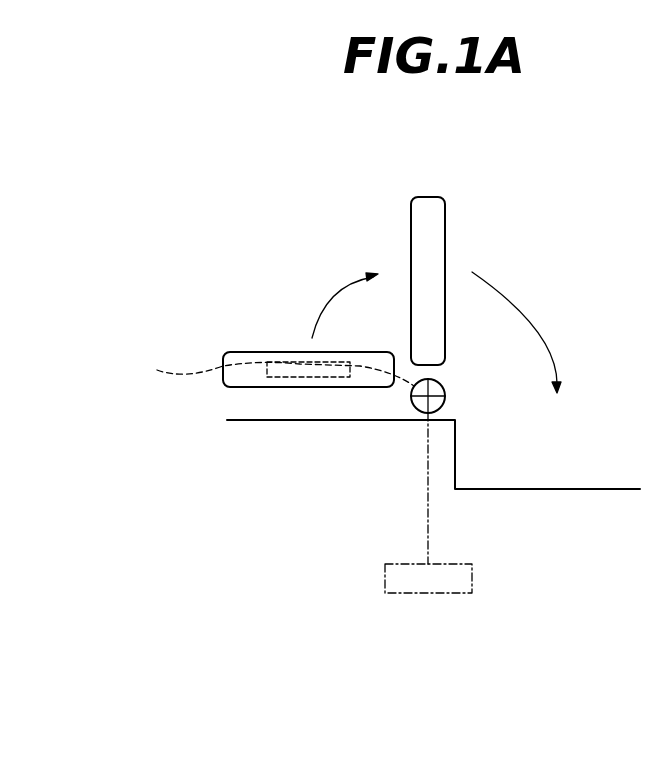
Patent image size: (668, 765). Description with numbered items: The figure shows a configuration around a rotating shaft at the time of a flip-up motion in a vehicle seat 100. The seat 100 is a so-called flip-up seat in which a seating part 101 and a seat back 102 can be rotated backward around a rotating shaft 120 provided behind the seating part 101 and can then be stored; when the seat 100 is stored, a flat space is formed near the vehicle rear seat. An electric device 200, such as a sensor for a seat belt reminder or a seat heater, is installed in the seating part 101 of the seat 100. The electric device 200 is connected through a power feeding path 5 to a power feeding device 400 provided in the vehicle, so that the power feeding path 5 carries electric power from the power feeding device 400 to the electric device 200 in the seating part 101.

The seat 100 is at (316, 263).
The seating part 101 is at (252, 352).
The seat back 102 is at (432, 233).
The rotating shaft 120 is at (450, 394).
The electric device 200 is at (255, 374).
The power feeding path 5 is at (395, 453).
The power feeding device 400 is at (436, 593).